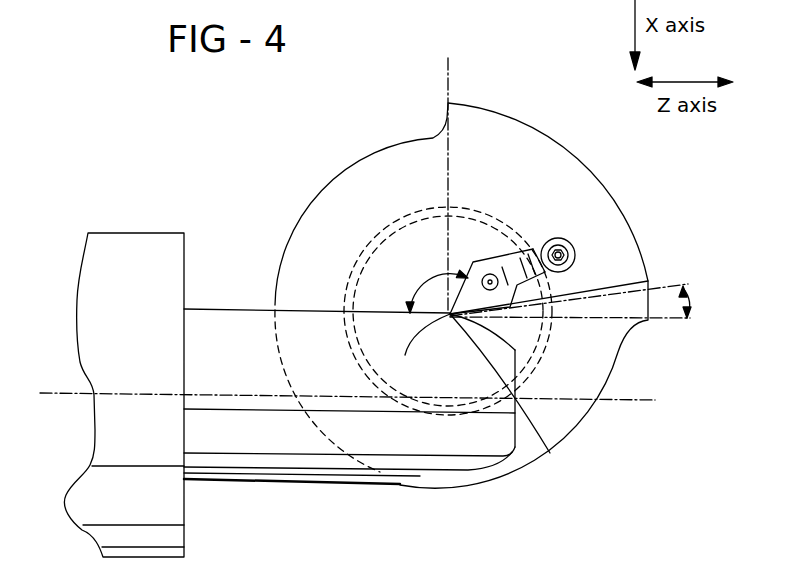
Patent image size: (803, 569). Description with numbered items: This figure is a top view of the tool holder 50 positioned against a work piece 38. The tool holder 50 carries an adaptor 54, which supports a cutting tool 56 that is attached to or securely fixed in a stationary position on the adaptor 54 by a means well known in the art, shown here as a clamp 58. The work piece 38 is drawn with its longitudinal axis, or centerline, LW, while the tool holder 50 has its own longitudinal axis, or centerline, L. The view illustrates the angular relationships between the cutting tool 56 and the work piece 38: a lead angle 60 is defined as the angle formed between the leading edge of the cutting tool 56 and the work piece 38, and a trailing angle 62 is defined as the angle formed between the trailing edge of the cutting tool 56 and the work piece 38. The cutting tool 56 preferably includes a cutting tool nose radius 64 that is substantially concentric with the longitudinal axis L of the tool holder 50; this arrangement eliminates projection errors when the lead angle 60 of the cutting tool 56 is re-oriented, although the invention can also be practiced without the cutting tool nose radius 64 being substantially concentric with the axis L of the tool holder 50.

The work piece 38 is at (238, 327).
The tool holder 50 is at (636, 191).
The adaptor 54 is at (403, 233).
The cutting tool 56 is at (465, 297).
The clamp 58 is at (475, 262).
The lead angle 60 is at (418, 283).
The trailing angle 62 is at (691, 302).
The cutting tool nose radius 64 is at (550, 453).
The longitudinal axis of the tool holder L is at (421, 338).
The longitudinal axis of the work piece LW is at (380, 398).